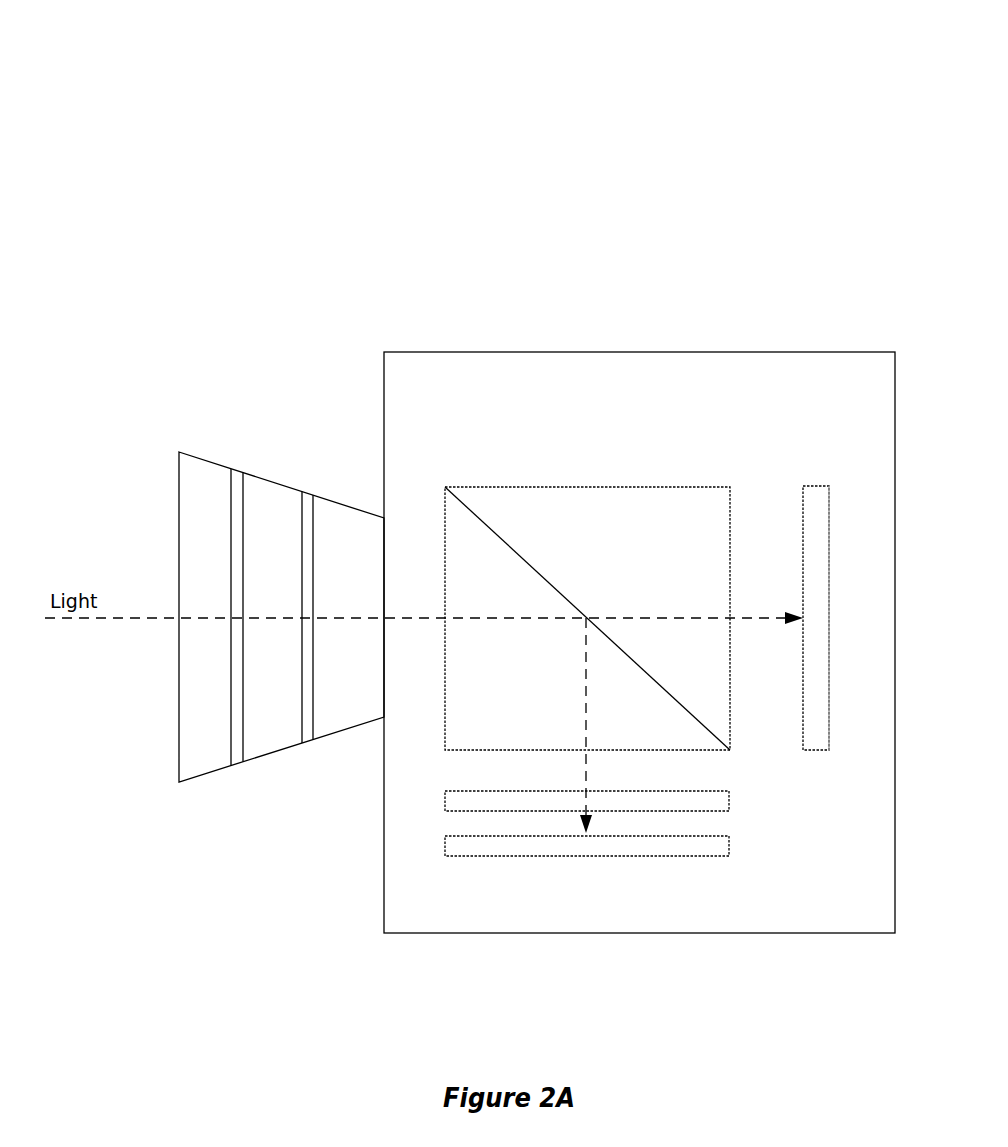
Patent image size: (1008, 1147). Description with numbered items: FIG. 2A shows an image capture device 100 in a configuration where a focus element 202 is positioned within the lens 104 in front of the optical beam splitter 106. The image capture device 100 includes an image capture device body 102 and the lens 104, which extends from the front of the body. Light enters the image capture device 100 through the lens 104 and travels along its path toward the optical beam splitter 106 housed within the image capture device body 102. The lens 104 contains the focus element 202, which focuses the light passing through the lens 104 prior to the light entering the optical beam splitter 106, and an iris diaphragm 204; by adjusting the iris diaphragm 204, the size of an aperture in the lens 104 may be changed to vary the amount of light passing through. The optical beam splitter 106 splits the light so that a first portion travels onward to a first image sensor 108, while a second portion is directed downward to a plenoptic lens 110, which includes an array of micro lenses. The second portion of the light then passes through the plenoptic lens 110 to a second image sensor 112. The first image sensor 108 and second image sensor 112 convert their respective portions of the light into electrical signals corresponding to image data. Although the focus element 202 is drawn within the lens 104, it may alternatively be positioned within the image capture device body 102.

The image capture device 100 is at (478, 91).
The image capture device body 102 is at (384, 824).
The lens 104 is at (179, 782).
The optical beam splitter 106 is at (500, 751).
The first image sensor 108 is at (820, 750).
The plenoptic lens 110 is at (449, 811).
The second image sensor 112 is at (453, 856).
The focus element 202 is at (241, 763).
The iris diaphragm 204 is at (311, 741).